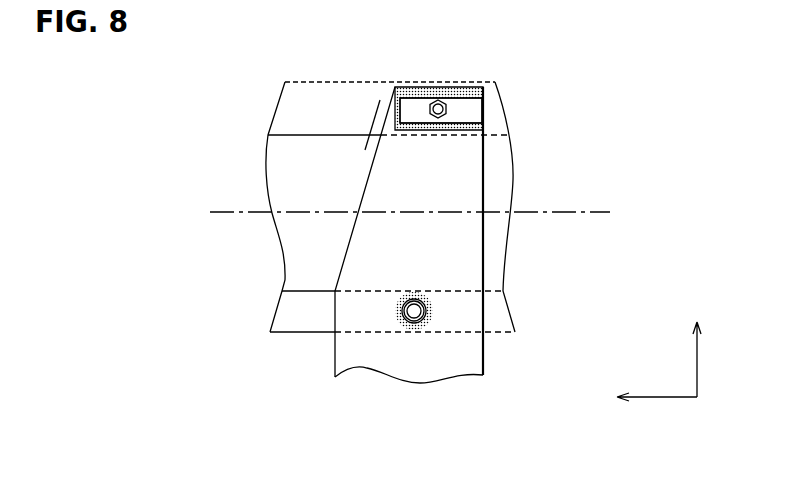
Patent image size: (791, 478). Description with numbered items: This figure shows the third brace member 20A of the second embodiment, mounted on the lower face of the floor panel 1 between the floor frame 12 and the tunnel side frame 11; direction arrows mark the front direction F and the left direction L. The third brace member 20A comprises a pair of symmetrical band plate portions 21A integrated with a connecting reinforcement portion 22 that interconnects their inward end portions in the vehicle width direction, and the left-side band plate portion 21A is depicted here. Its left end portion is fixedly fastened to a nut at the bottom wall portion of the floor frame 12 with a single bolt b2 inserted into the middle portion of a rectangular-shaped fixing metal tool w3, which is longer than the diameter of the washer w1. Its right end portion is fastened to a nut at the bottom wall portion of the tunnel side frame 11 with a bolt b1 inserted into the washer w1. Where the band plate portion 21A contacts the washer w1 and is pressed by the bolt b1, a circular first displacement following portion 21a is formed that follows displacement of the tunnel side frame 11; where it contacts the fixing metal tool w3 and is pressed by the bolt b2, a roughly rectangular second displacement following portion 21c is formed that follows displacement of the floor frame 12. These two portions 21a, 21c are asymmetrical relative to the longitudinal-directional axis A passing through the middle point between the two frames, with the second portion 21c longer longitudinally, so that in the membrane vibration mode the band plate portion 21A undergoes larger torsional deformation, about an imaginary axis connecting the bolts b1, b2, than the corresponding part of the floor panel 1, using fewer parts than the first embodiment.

The floor panel 1 is at (278, 157).
The floor frame 12 is at (303, 95).
The tunnel side frame 11 is at (288, 322).
The band plate portion 21A is at (385, 190).
The connecting reinforcement portion 22 is at (483, 353).
The third brace member 20A is at (377, 112).
The second displacement following portion 21c is at (460, 90).
The fixing metal tool w3 is at (422, 100).
The bolt b2 is at (439, 120).
The bolt b1 is at (412, 296).
The washer w1 is at (407, 330).
The first displacement following portion 21a is at (433, 318).
The longitudinal-directional axis A is at (578, 212).
The left direction L is at (697, 352).
The front direction F is at (653, 397).